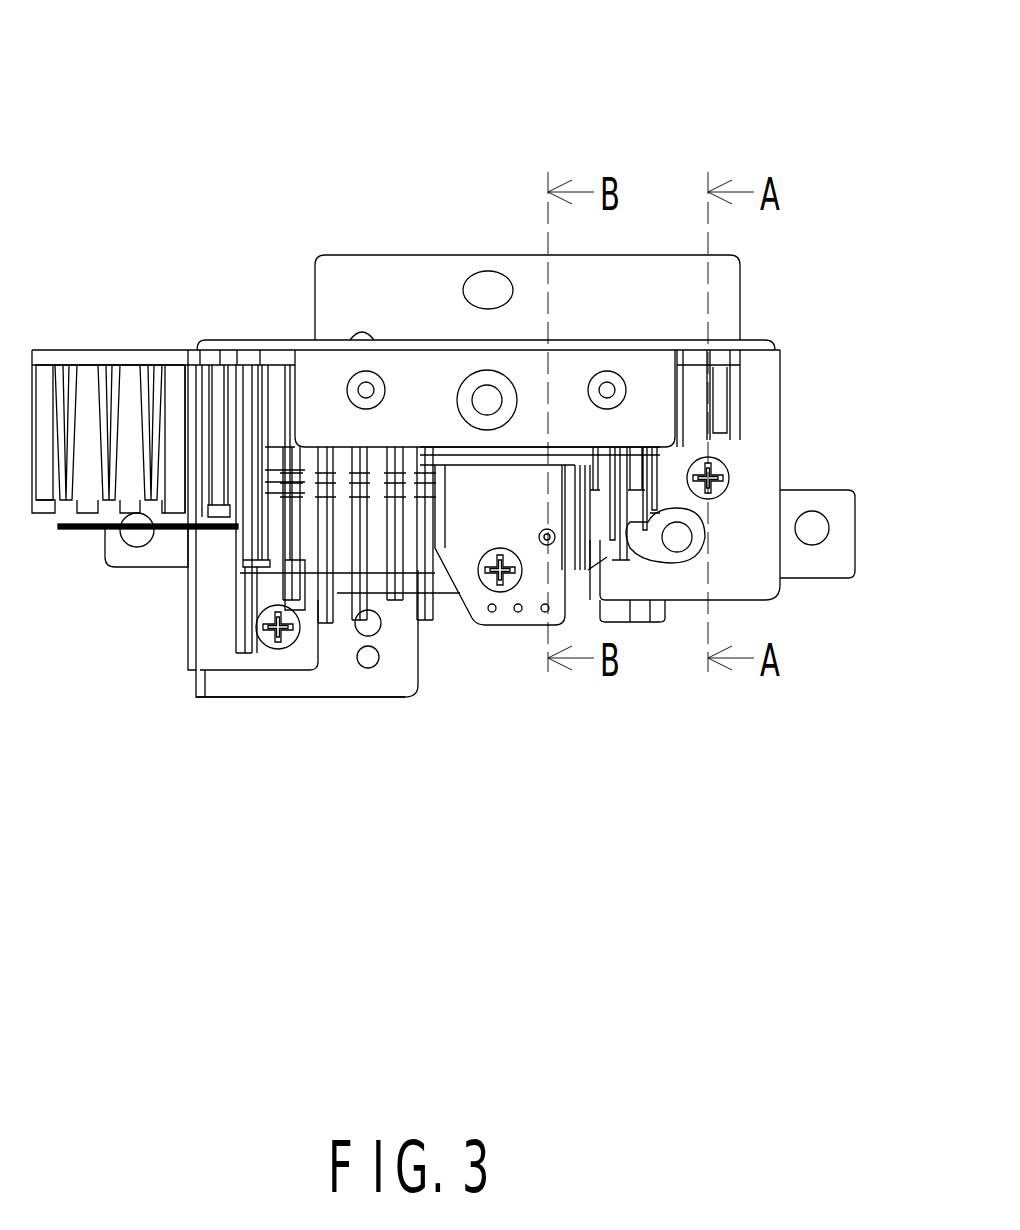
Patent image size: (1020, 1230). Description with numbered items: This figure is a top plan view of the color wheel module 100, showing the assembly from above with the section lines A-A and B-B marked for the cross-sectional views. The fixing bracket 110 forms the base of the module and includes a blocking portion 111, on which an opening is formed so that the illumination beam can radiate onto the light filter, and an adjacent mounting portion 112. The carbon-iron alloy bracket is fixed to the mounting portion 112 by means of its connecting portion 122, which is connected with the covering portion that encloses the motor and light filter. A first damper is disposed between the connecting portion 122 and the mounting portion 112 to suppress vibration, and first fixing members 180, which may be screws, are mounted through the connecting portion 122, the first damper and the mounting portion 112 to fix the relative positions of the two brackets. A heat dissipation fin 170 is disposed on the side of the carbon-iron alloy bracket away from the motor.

The color wheel module 100 is at (96, 66).
The fixing bracket 110 is at (308, 352).
The blocking portion 111 is at (351, 355).
The mounting portion 112 is at (252, 686).
The connecting portion 122 is at (762, 482).
The heat dissipation fin 170 is at (275, 573).
The first fixing member 180 is at (720, 476).